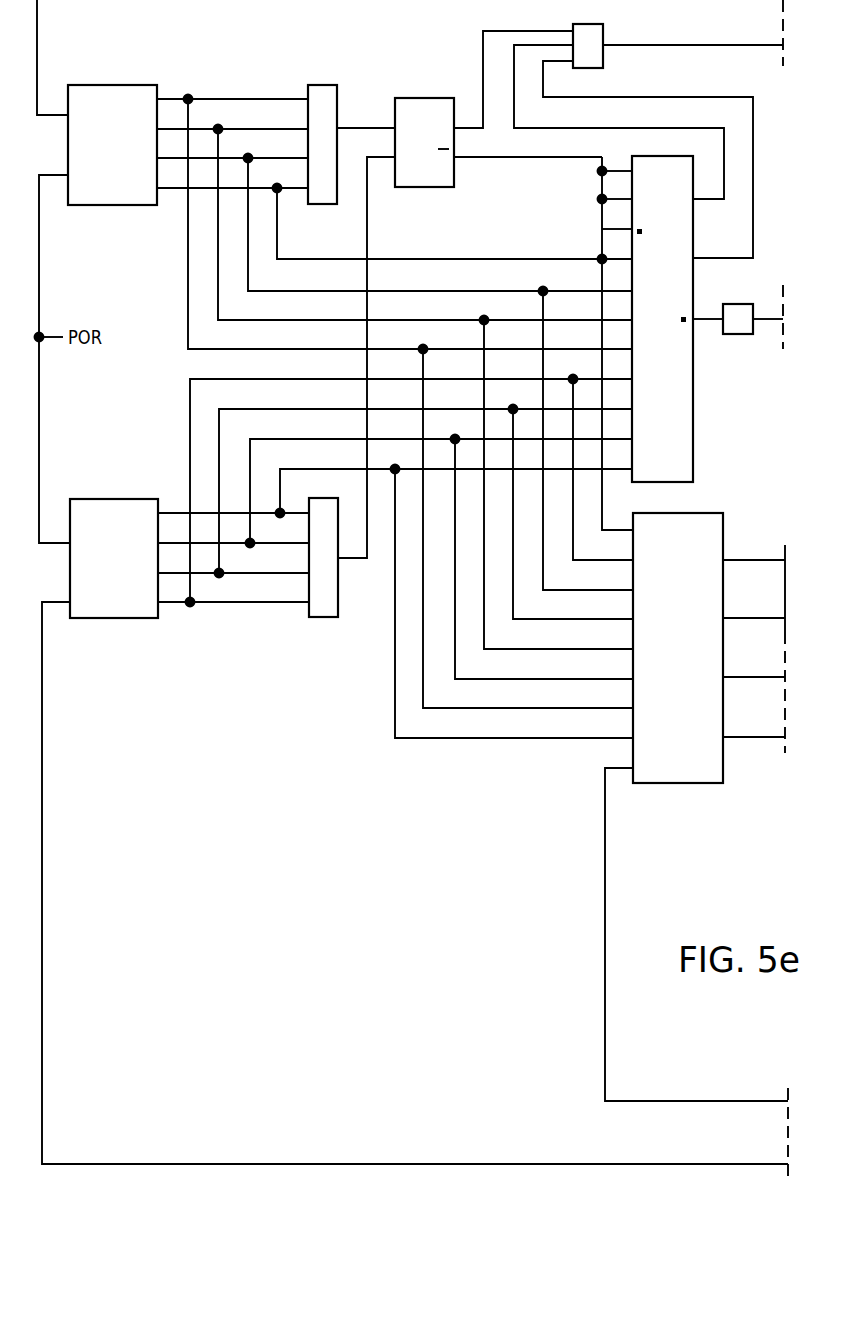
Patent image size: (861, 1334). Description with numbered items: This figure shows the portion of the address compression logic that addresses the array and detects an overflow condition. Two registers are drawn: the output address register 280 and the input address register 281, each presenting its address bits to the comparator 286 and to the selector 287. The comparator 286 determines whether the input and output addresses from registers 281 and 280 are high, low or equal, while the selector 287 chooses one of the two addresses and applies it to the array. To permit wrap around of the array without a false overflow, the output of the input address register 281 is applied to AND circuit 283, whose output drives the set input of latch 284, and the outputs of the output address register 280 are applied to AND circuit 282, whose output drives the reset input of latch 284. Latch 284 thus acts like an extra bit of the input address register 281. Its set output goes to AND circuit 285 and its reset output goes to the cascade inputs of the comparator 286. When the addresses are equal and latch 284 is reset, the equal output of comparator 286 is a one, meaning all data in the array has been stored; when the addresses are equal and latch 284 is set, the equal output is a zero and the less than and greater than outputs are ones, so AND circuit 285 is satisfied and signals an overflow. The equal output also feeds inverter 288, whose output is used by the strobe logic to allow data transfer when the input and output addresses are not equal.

The output address register 280 is at (132, 86).
The input address register 281 is at (130, 500).
The AND circuit 282 is at (329, 86).
The AND circuit 283 is at (318, 619).
The latch 284 is at (441, 95).
The AND circuit 285 is at (603, 29).
The comparator 286 is at (694, 455).
The selector 287 is at (672, 784).
The inverter 288 is at (728, 336).